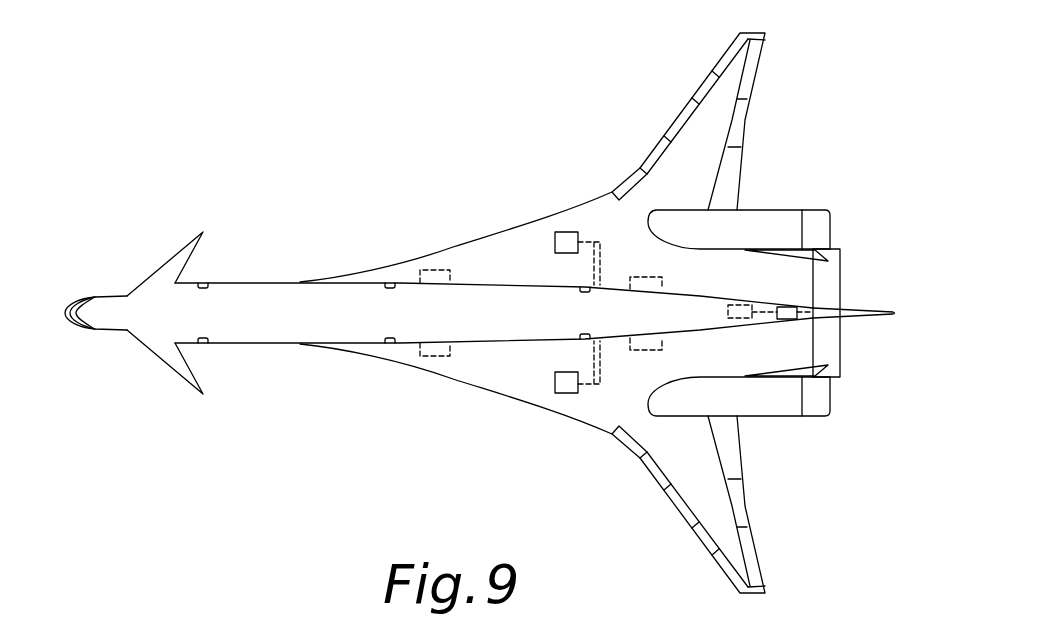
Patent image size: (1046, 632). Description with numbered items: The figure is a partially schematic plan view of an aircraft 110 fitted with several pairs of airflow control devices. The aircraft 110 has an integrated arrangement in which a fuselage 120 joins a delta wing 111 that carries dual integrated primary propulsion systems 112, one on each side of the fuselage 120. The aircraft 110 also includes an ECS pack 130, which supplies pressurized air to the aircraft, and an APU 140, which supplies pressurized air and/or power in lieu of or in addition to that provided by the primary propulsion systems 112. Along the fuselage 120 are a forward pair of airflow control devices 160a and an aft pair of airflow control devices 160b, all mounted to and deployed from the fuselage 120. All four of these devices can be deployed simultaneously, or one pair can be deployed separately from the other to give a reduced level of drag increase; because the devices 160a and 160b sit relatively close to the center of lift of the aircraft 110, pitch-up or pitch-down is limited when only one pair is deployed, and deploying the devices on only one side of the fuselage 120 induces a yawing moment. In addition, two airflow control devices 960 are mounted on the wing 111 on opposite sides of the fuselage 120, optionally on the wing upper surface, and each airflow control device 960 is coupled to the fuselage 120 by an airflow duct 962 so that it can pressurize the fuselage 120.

The aircraft 110 is at (335, 196).
The delta wing 111 is at (550, 221).
The primary propulsion system 112 is at (776, 207).
The fuselage 120 is at (248, 283).
The ECS pack 130 is at (752, 303).
The APU 140 is at (797, 313).
The forward pair of airflow control devices 160a is at (427, 270).
The aft pair of airflow control devices 160b is at (637, 276).
The airflow control device 960 is at (554, 241).
The airflow duct 962 is at (594, 238).